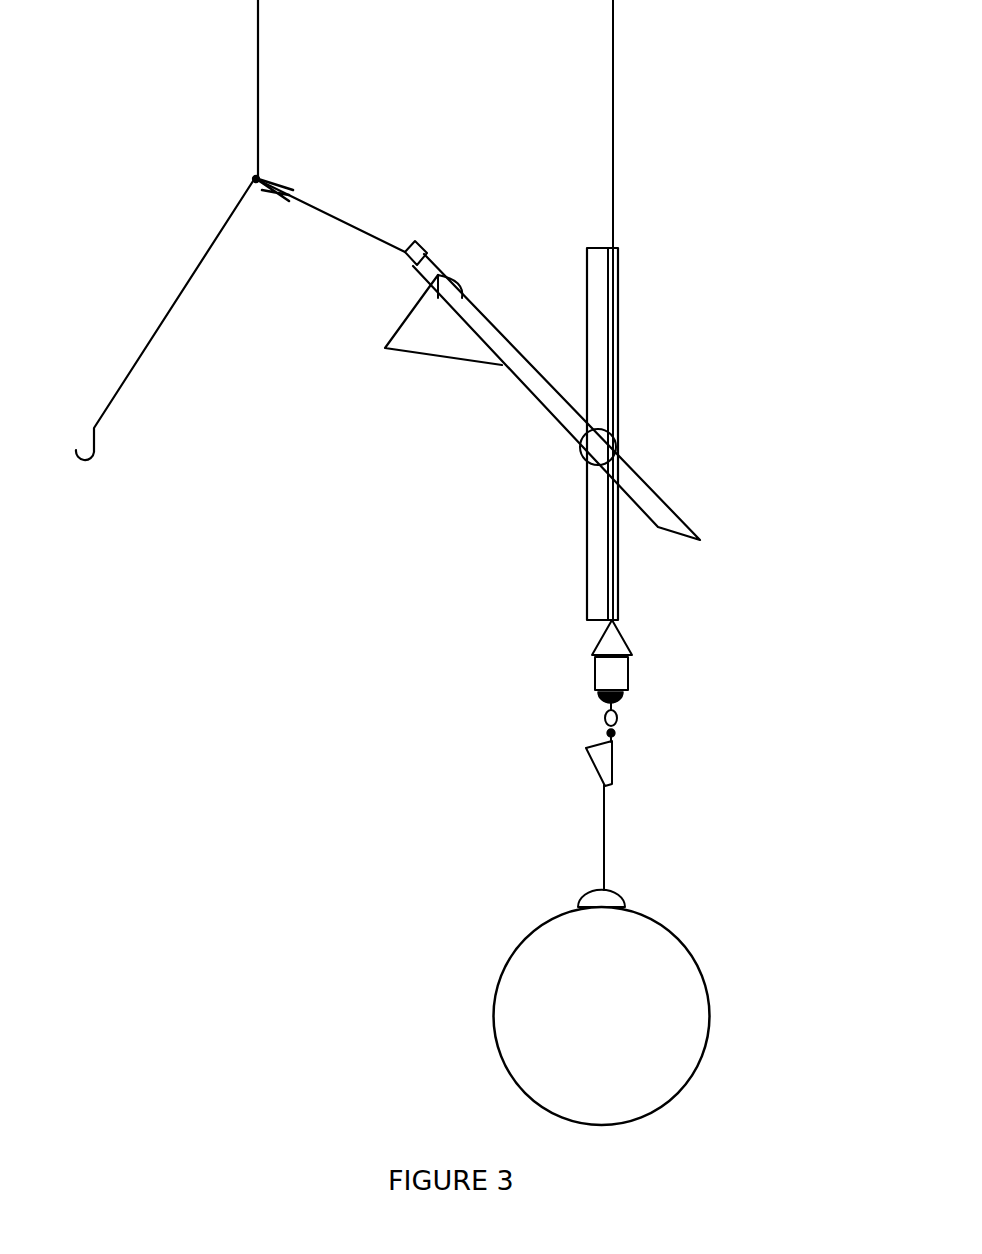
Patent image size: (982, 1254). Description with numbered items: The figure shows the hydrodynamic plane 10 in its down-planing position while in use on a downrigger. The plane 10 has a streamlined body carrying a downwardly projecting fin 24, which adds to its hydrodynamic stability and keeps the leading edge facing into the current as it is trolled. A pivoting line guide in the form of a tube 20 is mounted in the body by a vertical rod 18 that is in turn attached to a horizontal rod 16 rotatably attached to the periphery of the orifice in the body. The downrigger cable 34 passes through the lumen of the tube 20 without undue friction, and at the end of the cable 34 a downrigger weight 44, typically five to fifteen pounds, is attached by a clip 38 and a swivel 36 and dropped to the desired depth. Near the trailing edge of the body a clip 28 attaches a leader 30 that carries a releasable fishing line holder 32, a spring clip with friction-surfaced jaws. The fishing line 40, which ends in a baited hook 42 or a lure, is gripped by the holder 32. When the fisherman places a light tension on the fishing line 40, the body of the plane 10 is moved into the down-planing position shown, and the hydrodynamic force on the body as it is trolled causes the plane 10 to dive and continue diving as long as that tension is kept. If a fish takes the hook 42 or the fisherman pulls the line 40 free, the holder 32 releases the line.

The hydrodynamic plane 10 is at (683, 486).
The horizontal rod 16 is at (578, 455).
The vertical rod 18 is at (587, 270).
The tube 20 is at (618, 292).
The fin 24 is at (403, 350).
The clip 28 is at (435, 258).
The leader 30 is at (355, 222).
The releasable fishing line holder 32 is at (280, 183).
The downrigger cable 34 is at (613, 143).
The swivel 36 is at (625, 680).
The clip 38 is at (612, 767).
The fishing line 40 is at (258, 70).
The baited hook 42 is at (95, 445).
The downrigger weight 44 is at (710, 1006).